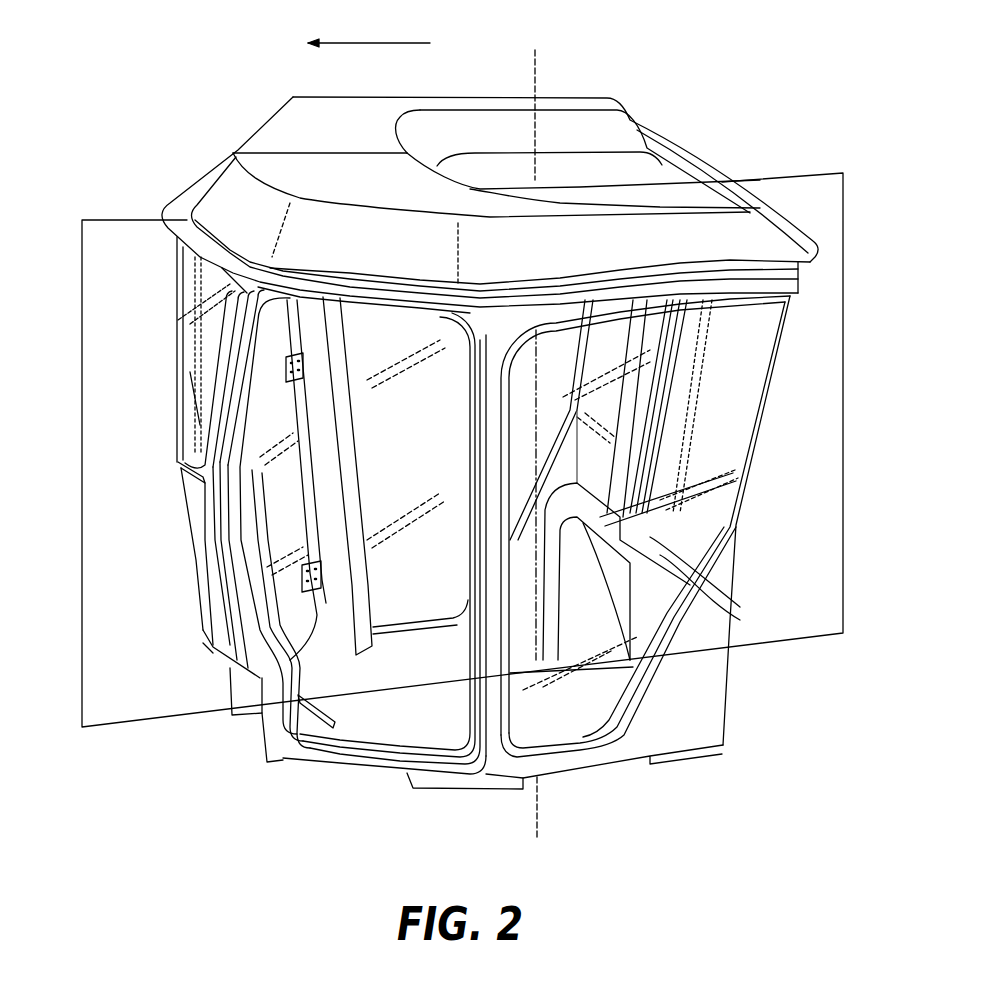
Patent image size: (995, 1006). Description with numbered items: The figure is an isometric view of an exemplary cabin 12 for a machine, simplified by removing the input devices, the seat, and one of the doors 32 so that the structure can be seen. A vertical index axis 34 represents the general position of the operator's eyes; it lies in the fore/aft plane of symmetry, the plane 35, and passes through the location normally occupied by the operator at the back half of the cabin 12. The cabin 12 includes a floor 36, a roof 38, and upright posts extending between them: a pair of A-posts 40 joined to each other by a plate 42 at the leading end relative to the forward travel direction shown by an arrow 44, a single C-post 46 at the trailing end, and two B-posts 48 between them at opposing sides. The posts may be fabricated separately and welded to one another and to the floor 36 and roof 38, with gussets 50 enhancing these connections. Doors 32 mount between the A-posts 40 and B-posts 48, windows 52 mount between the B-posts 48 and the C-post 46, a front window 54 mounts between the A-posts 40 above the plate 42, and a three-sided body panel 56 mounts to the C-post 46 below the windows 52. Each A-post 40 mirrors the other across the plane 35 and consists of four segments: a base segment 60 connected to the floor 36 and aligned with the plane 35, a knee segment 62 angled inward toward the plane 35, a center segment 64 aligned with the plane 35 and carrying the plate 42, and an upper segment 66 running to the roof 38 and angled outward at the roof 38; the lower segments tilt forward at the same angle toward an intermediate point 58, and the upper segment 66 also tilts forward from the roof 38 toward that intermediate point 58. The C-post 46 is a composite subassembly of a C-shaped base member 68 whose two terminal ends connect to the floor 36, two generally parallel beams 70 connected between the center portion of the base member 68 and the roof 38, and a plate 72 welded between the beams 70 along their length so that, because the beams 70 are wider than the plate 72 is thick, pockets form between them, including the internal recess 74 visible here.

The cabin 12 is at (156, 66).
The door 32 is at (287, 408).
The index axis 34 is at (539, 80).
The plane 35 is at (82, 727).
The floor 36 is at (580, 727).
The roof 38 is at (668, 152).
The A-post 40 is at (247, 392).
The plate 42 is at (200, 549).
The arrow 44 is at (387, 42).
The C-post 46 is at (722, 354).
The B-post 48 is at (493, 443).
The gusset 50 is at (360, 653).
The window 52 is at (568, 328).
The front window 54 is at (212, 326).
The body panel 56 is at (722, 583).
The intermediate point 58 is at (180, 465).
The base segment 60 is at (265, 740).
The knee segment 62 is at (238, 673).
The center segment 64 is at (210, 602).
The upper segment 66 is at (200, 425).
The base member 68 is at (572, 563).
The beam 70 is at (670, 418).
The plate 72 is at (623, 390).
The internal recess 74 is at (657, 330).